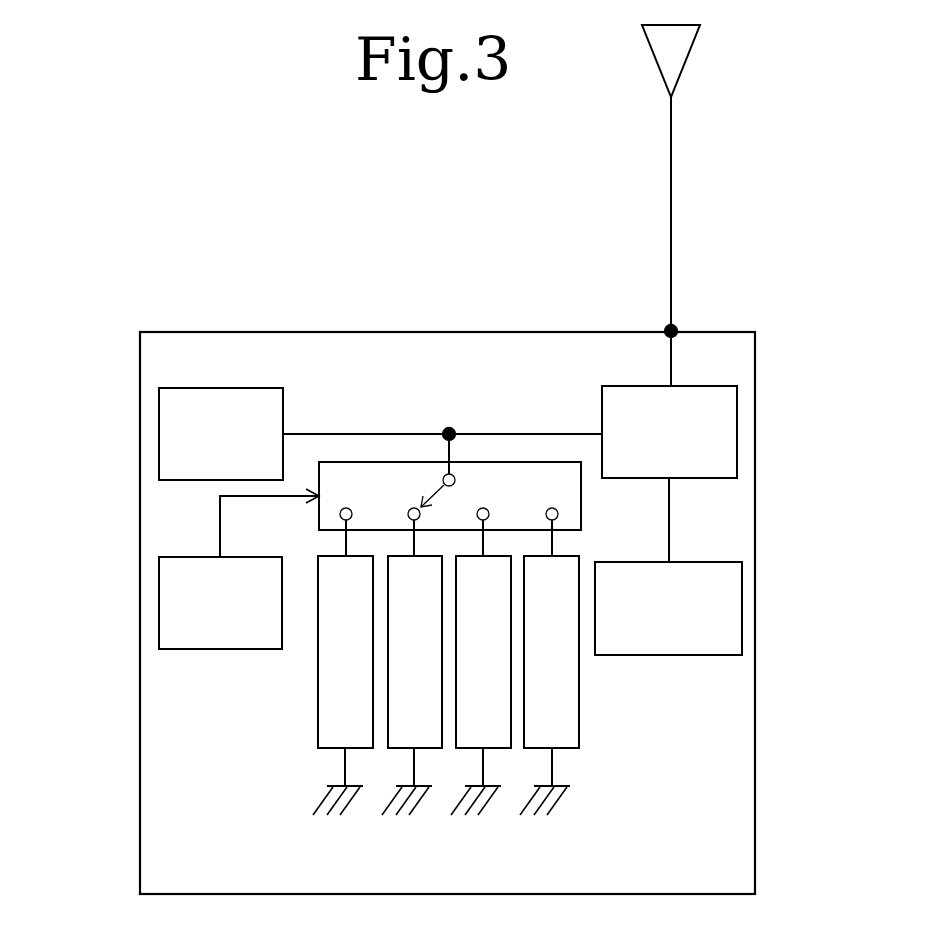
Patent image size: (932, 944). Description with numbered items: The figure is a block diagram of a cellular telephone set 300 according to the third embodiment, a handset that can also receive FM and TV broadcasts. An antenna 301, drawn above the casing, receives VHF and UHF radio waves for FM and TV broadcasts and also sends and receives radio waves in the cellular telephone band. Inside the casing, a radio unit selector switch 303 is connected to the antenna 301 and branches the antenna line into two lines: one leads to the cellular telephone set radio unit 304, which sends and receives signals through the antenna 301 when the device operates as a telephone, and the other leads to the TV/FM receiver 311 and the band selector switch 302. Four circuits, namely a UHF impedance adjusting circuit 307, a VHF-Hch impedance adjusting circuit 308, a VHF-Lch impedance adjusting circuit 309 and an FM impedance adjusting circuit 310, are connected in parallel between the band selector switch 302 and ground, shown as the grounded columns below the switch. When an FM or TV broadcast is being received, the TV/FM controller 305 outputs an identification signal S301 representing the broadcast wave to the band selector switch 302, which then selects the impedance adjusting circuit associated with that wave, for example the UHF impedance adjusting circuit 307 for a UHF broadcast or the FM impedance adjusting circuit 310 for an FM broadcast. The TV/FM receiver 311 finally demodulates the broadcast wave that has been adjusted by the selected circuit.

The cellular telephone set 300 is at (793, 557).
The antenna 301 is at (671, 197).
The band selector switch 302 is at (477, 462).
The radio unit selector switch 303 is at (737, 407).
The cellular telephone set radio unit 304 is at (742, 615).
The TV/FM controller 305 is at (159, 600).
The UHF impedance adjusting circuit 307 is at (318, 712).
The VHF-Hch impedance adjusting circuit 308 is at (386, 729).
The VHF-Lch impedance adjusting circuit 309 is at (453, 728).
The FM impedance adjusting circuit 310 is at (580, 722).
The TV/FM receiver 311 is at (211, 387).
The identification signal S301 is at (220, 518).